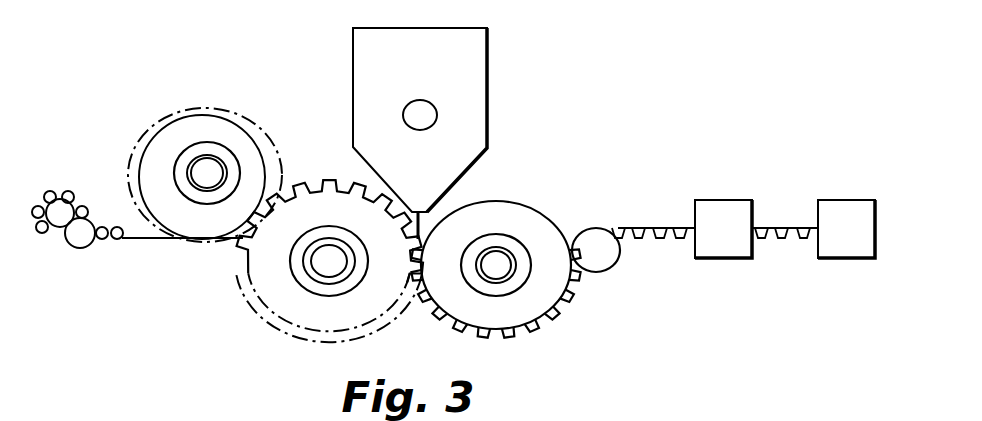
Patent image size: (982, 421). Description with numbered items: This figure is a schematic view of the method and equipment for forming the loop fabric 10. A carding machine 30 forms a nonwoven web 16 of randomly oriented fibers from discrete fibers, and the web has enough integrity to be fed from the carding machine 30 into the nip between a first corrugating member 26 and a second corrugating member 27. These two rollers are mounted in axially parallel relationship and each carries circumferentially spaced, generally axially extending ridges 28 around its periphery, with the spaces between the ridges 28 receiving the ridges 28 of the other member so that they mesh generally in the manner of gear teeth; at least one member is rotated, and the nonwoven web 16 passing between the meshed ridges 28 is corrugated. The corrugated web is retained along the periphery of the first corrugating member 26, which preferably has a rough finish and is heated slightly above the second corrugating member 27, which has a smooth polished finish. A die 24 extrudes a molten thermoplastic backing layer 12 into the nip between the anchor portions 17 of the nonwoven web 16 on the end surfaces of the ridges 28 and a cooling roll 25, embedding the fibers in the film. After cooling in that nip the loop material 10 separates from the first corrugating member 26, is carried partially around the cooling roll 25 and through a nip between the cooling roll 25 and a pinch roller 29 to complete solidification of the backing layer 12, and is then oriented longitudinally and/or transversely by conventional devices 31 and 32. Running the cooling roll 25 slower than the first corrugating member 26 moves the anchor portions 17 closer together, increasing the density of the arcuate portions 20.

The loop fabric 10 is at (608, 228).
The thermoplastic backing layer 12 is at (427, 222).
The nonwoven web 16 is at (153, 240).
The anchor portions 17 is at (347, 180).
The arcuate portions 20 is at (386, 200).
The die 24 is at (467, 78).
The cooling roll 25 is at (472, 318).
The first corrugating member 26 is at (280, 305).
The second corrugating member 27 is at (203, 128).
The ridges 28 is at (288, 188).
The pinch roller 29 is at (598, 262).
The carding machine 30 is at (59, 205).
The orienting device 31 is at (720, 208).
The orienting device 32 is at (842, 248).